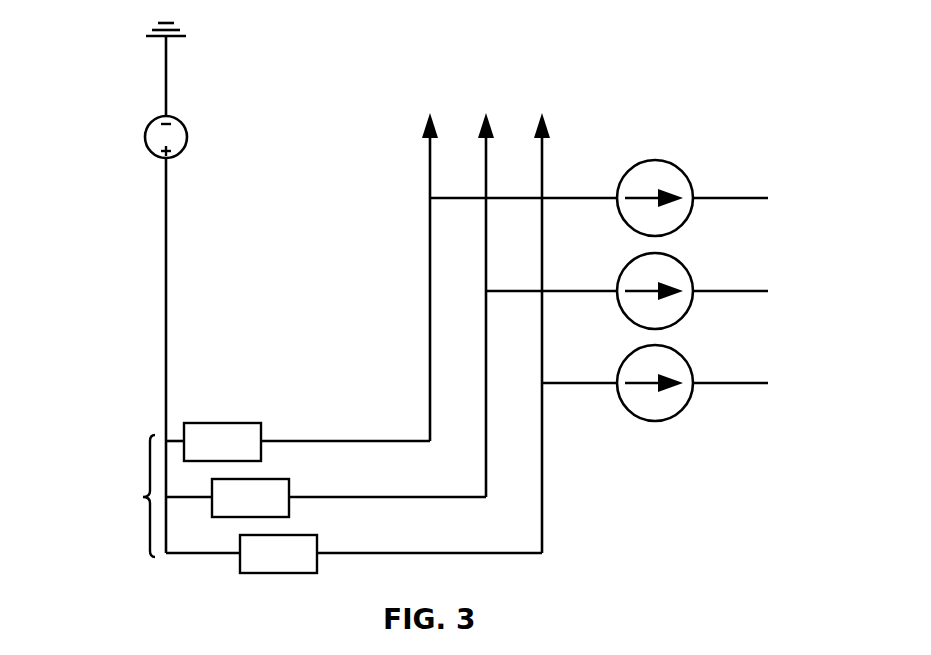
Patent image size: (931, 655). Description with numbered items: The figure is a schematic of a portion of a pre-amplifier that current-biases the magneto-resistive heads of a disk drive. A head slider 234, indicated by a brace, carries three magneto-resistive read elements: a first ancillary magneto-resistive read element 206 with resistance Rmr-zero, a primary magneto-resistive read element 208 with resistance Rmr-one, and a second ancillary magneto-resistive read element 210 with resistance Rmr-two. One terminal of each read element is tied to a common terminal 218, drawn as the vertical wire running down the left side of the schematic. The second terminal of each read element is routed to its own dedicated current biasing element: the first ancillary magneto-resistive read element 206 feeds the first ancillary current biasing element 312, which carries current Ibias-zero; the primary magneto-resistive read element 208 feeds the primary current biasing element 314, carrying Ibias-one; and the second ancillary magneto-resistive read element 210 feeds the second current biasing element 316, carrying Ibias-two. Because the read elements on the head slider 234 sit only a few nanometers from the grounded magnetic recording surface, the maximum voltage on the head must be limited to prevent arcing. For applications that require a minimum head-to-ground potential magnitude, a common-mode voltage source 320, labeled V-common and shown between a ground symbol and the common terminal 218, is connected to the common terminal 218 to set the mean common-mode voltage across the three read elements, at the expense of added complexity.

The common terminal 218 is at (166, 197).
The common-mode voltage source 320 is at (188, 143).
The first ancillary magneto-resistive read element 206 is at (216, 423).
The primary magneto-resistive read element 208 is at (289, 483).
The second ancillary magneto-resistive read element 210 is at (317, 540).
The head slider 234 is at (143, 497).
The first ancillary current biasing element 312 is at (663, 160).
The primary current biasing element 314 is at (683, 264).
The second current biasing element 316 is at (685, 358).